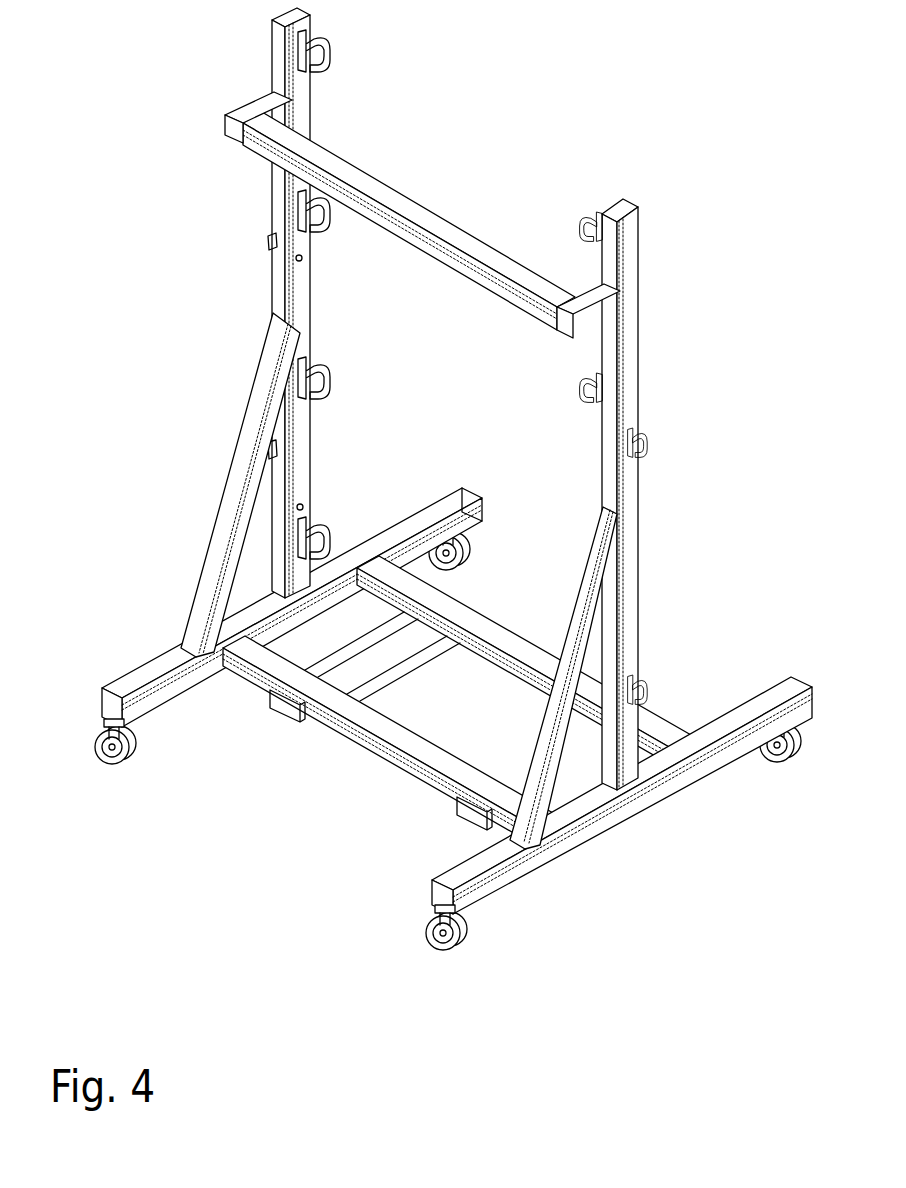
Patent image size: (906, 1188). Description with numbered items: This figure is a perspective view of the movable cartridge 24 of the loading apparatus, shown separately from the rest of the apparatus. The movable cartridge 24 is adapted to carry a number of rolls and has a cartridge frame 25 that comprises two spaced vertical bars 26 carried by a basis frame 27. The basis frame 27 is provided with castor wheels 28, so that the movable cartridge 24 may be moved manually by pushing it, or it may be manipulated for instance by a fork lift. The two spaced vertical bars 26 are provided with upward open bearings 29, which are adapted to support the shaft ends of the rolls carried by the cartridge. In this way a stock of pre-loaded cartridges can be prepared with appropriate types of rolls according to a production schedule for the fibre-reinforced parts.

The movable cartridge 24 is at (207, 415).
The cartridge frame 25 is at (632, 637).
The vertical bars 26 is at (280, 277).
The basis frame 27 is at (400, 757).
The castor wheels 28 is at (460, 935).
The upward open bearings 29 is at (315, 373).